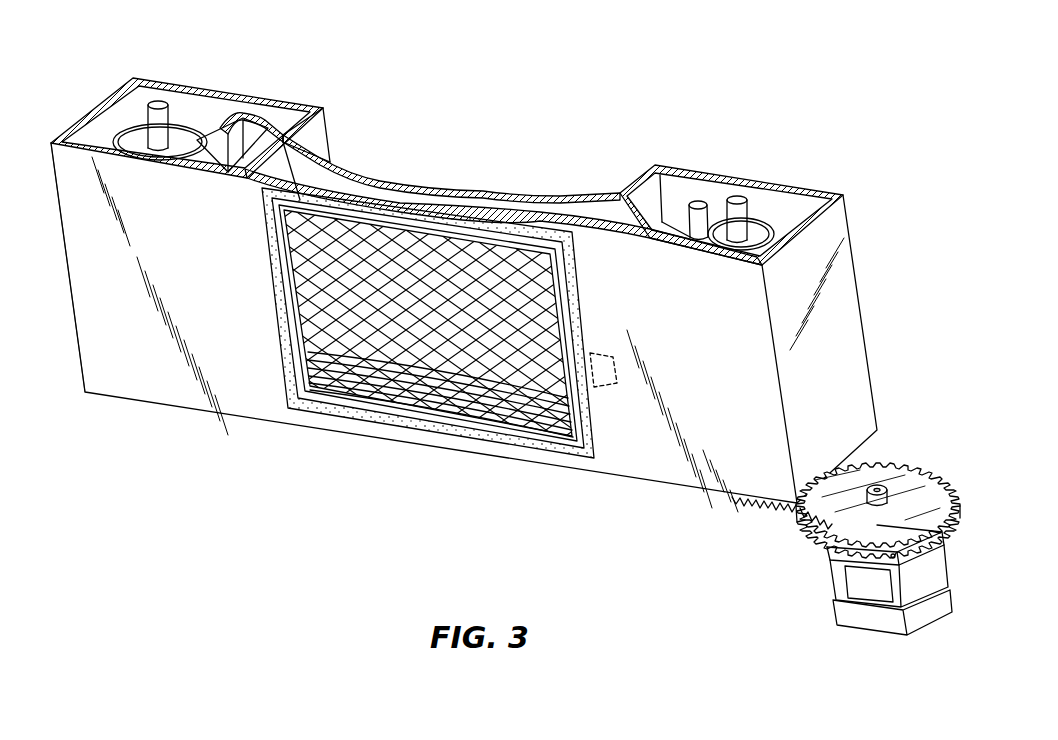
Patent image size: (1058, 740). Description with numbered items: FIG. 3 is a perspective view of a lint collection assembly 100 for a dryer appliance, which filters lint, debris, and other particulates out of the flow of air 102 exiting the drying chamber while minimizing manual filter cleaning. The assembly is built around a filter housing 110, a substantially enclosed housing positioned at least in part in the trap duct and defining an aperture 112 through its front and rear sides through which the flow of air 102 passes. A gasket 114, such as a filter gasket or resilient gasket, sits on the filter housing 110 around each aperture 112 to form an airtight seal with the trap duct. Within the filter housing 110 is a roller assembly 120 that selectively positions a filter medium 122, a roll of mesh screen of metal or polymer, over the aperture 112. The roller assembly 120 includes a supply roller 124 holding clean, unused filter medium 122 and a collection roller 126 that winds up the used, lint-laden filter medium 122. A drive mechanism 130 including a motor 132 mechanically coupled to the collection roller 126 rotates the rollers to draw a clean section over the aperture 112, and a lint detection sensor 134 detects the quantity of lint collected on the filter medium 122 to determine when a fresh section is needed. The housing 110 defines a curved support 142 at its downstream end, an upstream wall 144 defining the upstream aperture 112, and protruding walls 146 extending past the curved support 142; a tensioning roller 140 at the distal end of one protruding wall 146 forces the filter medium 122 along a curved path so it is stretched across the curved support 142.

The lint collection assembly 100 is at (118, 46).
The flow of air 102 is at (368, 326).
The filter housing 110 is at (837, 238).
The aperture 112 is at (481, 262).
The gasket 114 is at (285, 400).
The roller assembly 120 is at (740, 130).
The filter medium 122 is at (383, 258).
The supply roller 124 is at (184, 134).
The collection roller 126 is at (762, 230).
The drive mechanism 130 is at (764, 540).
The motor 132 is at (845, 590).
The lint detection sensor 134 is at (600, 387).
The tensioning roller 140 is at (679, 214).
The curved support 142 is at (534, 196).
The upstream wall 144 is at (156, 362).
The protruding walls 146 is at (262, 125).